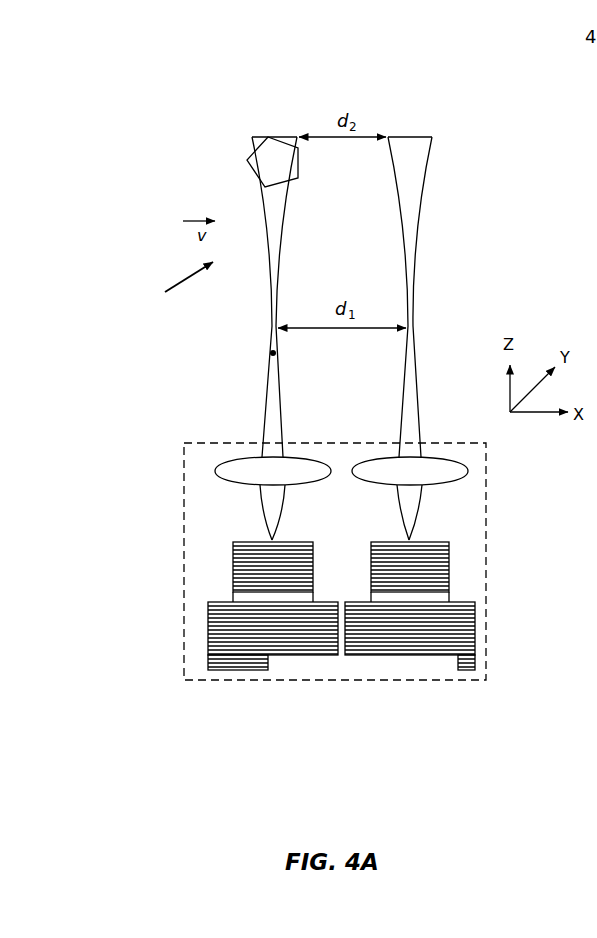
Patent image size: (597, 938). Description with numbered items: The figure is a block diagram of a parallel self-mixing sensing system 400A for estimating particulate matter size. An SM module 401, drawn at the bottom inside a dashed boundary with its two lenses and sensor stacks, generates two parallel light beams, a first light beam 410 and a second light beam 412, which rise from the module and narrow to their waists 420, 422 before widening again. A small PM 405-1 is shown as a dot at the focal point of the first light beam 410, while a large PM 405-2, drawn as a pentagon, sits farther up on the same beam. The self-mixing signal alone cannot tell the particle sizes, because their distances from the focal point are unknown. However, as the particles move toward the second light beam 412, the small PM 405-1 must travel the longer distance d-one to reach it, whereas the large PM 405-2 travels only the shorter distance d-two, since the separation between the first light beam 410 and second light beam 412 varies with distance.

The parallel self-mixing sensing system 400A is at (178, 19).
The first light beam 410 is at (263, 133).
The second light beam 412 is at (422, 133).
The large PM 405-2 is at (295, 179).
The small PM 405-1 is at (280, 357).
The first beam waist 420 is at (269, 328).
The second beam waist 422 is at (417, 330).
The SM module 401 is at (258, 684).